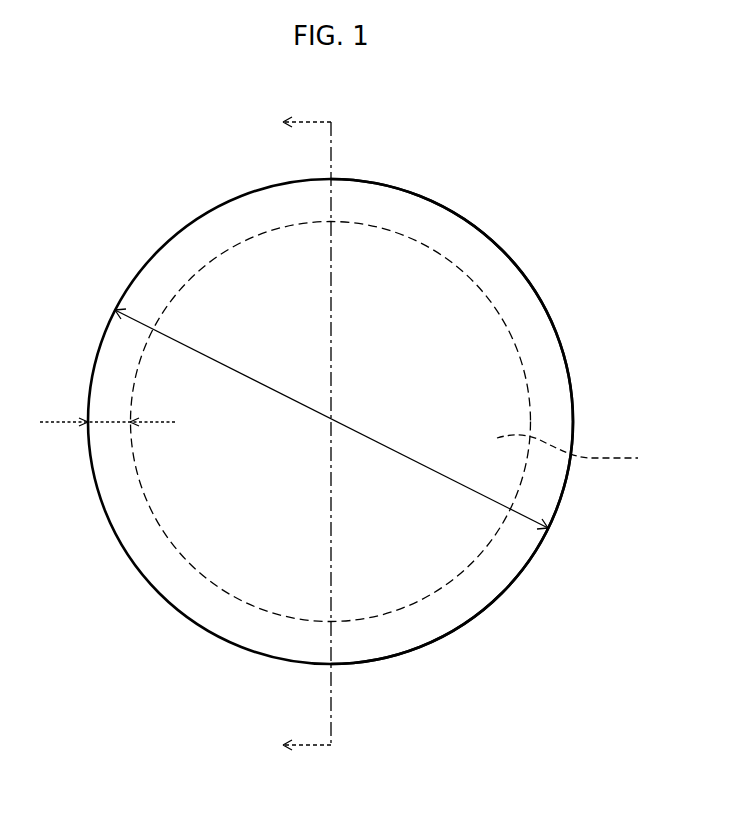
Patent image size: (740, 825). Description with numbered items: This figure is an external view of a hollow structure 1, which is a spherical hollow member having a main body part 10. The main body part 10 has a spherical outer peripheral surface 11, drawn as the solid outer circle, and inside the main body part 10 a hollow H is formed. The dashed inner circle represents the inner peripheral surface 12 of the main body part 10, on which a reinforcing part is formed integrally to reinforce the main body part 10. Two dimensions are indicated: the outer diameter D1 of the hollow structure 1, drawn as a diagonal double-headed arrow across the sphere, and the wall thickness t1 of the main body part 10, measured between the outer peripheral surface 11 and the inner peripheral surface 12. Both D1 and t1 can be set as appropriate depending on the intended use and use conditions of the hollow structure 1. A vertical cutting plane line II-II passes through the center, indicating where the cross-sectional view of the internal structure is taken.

The hollow structure 1 is at (453, 142).
The main body part 10 is at (499, 244).
The outer peripheral surface 11 is at (568, 373).
The inner peripheral surface 12 is at (522, 358).
The hollow H is at (577, 451).
The outer diameter D1 is at (331, 419).
The wall thickness t1 is at (108, 408).
The cutting plane line II- II is at (294, 433).